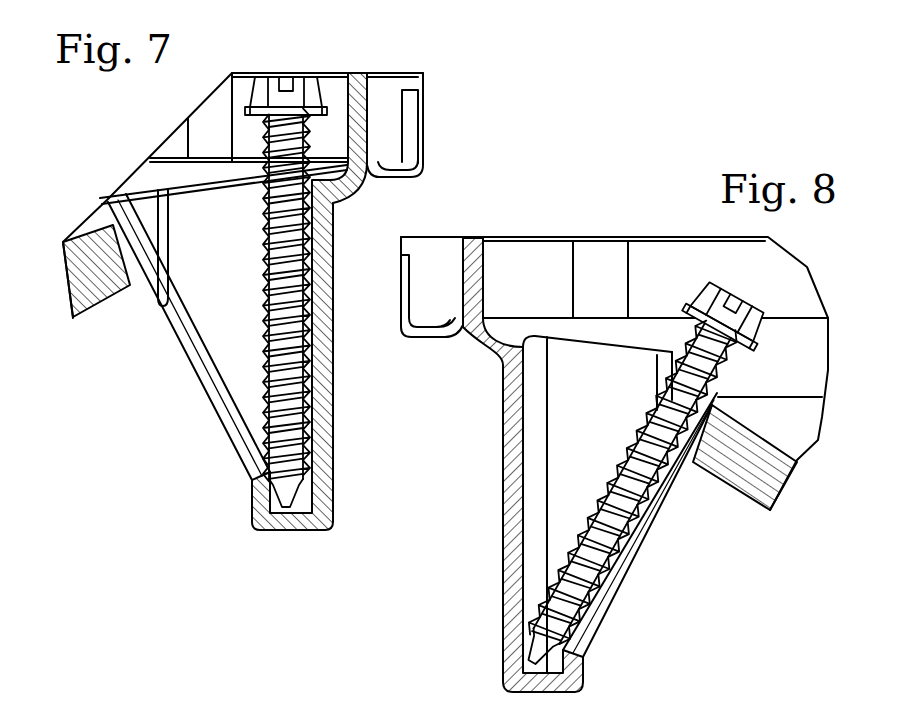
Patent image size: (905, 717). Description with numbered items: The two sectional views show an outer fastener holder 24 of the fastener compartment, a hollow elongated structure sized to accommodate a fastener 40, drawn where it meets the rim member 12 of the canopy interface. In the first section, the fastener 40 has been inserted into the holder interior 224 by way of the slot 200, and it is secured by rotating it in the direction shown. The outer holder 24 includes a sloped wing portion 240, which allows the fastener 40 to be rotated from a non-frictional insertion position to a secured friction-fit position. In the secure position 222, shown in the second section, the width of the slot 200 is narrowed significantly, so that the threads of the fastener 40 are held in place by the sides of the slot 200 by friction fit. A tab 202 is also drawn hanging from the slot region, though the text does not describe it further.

In FIG. 7, the rim member 12 is at (427, 110).
In FIG. 7, the outer fastener holder 24 is at (323, 435).
In FIG. 8, the outer fastener holder 24 is at (508, 465).
In FIG. 7, the fastener 40 is at (297, 74).
In FIG. 8, the fastener 40 is at (627, 445).
In FIG. 7, the slot 200 is at (228, 178).
In FIG. 8, the slot 200 is at (570, 337).
In FIG. 7, the hanging tab 202 is at (163, 193).
In FIG. 8, the secure position 222 is at (720, 378).
In FIG. 7, the holder interior 224 is at (243, 285).
In FIG. 7, the sloped wing portion 240 is at (207, 400).
In FIG. 8, the sloped wing portion 240 is at (655, 512).